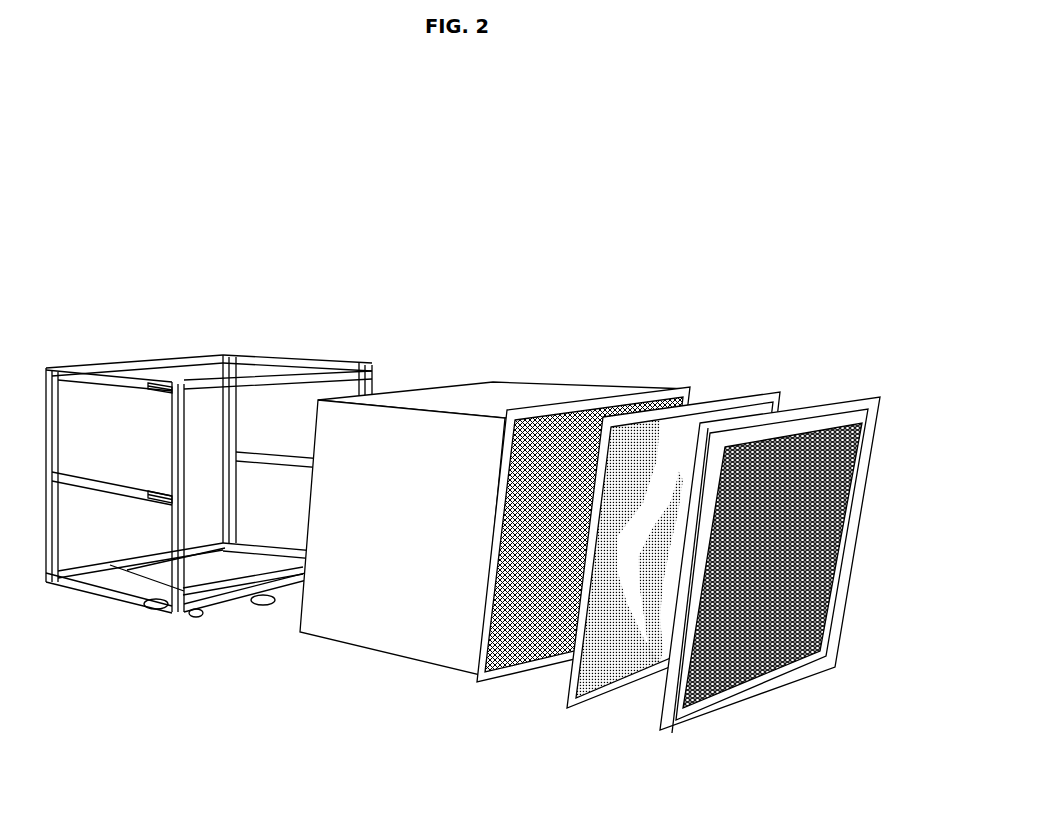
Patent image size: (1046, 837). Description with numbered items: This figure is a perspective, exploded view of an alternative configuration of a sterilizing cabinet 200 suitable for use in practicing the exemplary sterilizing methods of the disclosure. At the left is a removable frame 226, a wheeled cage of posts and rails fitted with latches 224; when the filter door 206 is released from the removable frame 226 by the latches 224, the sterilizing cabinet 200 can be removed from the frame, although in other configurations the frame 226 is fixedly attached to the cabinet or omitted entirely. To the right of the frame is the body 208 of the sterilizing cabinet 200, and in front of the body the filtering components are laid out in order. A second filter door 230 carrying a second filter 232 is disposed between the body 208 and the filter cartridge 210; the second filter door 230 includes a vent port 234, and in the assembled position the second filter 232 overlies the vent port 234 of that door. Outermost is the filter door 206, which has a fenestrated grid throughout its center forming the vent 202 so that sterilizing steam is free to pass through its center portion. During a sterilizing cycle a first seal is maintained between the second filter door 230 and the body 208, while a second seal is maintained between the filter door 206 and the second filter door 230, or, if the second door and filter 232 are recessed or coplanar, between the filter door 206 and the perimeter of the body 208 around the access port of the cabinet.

The sterilizing cabinet 200 is at (632, 490).
The vent 202 is at (794, 543).
The filter door 206 is at (812, 520).
The body 208 is at (503, 385).
The filter cartridge 210 is at (722, 390).
The latches 224 is at (162, 391).
The removable frame 226 is at (263, 350).
The second filter door 230 is at (510, 502).
The second filter 232 is at (528, 543).
The vent port 234 is at (524, 616).